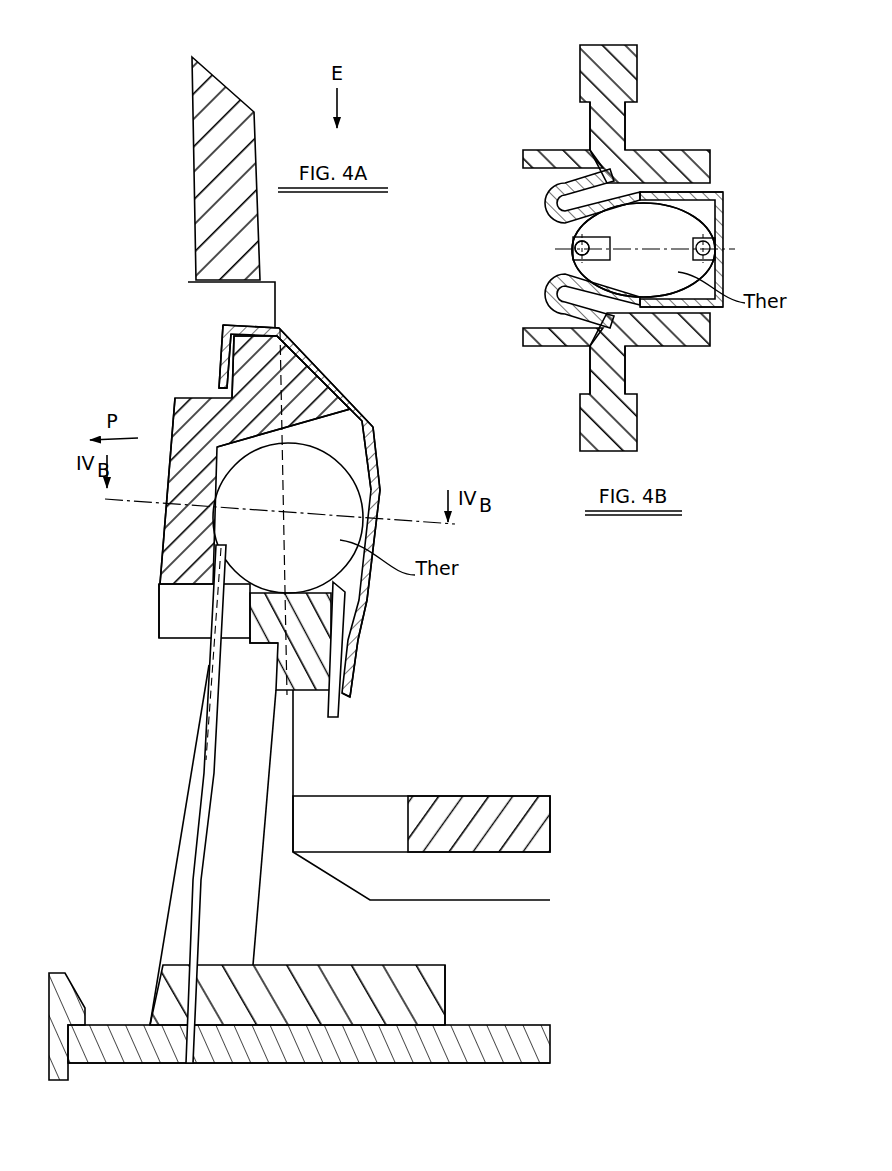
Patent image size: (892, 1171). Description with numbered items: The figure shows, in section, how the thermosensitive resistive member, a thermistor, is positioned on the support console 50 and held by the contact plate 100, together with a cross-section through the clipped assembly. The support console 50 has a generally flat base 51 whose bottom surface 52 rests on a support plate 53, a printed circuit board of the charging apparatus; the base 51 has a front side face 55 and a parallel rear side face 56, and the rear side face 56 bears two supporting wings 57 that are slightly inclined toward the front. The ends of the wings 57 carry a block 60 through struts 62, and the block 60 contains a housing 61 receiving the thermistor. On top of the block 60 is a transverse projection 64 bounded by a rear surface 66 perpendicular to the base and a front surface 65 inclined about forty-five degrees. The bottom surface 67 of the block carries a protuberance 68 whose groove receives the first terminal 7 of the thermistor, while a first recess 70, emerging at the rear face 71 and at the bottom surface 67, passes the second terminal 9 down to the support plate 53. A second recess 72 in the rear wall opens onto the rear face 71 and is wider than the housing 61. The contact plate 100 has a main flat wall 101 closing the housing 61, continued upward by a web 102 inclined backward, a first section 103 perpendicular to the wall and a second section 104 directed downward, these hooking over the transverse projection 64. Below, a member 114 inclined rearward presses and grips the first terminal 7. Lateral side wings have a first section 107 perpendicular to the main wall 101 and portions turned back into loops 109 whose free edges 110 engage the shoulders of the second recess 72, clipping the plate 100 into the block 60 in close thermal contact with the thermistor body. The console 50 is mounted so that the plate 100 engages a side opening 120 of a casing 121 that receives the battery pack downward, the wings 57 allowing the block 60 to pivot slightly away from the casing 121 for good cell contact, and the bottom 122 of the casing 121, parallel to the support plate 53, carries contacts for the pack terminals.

In FIG. 4A, the casing 121 is at (210, 148).
In FIG. 4A, the side opening 120 is at (217, 296).
In FIG. 4A, the first section 103 is at (247, 328).
In FIG. 4A, the second section 104 is at (221, 345).
In FIG. 4A, the transverse projection 64 is at (292, 376).
In FIG. 4A, the rear surface 66 is at (225, 381).
In FIG. 4A, the front surface 65 is at (333, 372).
In FIG. 4A, the rear face 71 is at (172, 410).
In FIG. 4A, the web 102 is at (340, 392).
In FIG. 4A, the housing 61 is at (348, 440).
In FIG. 4A, the contact plate 100 is at (385, 452).
In FIG. 4B, the contact plate 100 is at (724, 207).
In FIG. 4A, the main flat wall 101 is at (372, 503).
In FIG. 4B, the main flat wall 101 is at (730, 268).
In FIG. 4A, the support console 50 is at (152, 530).
In FIG. 4A, the first recess 70 is at (175, 615).
In FIG. 4A, the block 60 is at (156, 595).
In FIG. 4A, the member 114 is at (345, 647).
In FIG. 4A, the bottom surface 67 is at (260, 650).
In FIG. 4A, the first terminal 7 is at (352, 672).
In FIG. 4B, the first terminal 7 is at (710, 250).
In FIG. 4A, the second terminal 9 is at (207, 752).
In FIG. 4B, the second terminal 9 is at (578, 251).
In FIG. 4A, the protuberance 68 is at (308, 695).
In FIG. 4A, the bottom 122 is at (448, 800).
In FIG. 4A, the supporting wings 57 is at (185, 895).
In FIG. 4B, the supporting wings 57 is at (627, 57).
In FIG. 4A, the rear side face 56 is at (150, 990).
In FIG. 4A, the base 51 is at (308, 990).
In FIG. 4A, the front side face 55 is at (447, 993).
In FIG. 4A, the bottom surface 52 is at (276, 1030).
In FIG. 4A, the support plate 53 is at (413, 1053).
In FIG. 4B, the free edges 110 is at (608, 165).
In FIG. 4B, the struts 62 is at (612, 128).
In FIG. 4B, the first section 107 is at (710, 194).
In FIG. 4B, the loops 109 is at (548, 193).
In FIG. 4B, the second recess 72 is at (573, 245).